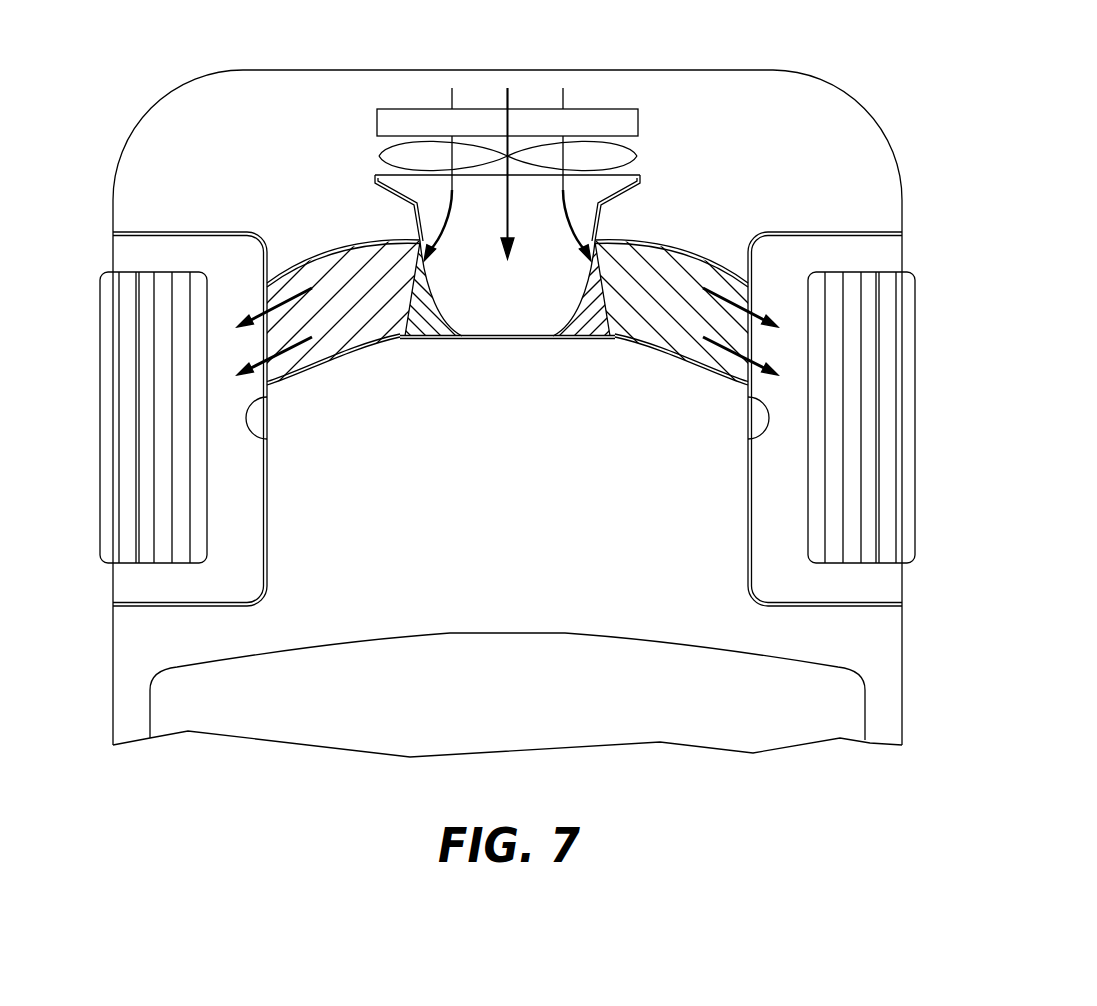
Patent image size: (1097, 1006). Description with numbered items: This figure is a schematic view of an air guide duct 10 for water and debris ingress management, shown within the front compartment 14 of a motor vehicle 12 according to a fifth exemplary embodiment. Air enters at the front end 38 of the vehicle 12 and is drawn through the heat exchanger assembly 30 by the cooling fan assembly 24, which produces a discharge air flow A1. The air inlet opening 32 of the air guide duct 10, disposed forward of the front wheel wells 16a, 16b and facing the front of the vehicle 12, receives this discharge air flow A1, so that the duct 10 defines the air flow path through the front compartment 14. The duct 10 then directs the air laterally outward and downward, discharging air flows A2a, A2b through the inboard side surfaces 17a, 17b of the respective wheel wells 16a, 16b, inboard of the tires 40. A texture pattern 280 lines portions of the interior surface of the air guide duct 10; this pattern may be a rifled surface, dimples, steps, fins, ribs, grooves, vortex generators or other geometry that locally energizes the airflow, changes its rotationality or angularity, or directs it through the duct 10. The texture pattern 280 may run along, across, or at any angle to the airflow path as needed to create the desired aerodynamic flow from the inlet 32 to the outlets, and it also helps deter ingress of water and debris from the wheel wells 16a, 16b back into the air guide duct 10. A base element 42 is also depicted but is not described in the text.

The motor vehicle 12 is at (851, 58).
The front end 38 is at (340, 70).
The heat exchanger assembly 30 is at (640, 125).
The cooling fan assembly 24 is at (618, 155).
The air inlet opening 32 is at (375, 178).
The air guide duct 10 is at (510, 339).
The texture pattern 280 is at (354, 318).
The tires 40 is at (128, 347).
The wheel well 16a is at (140, 585).
The wheel well 16b is at (878, 585).
The inboard side surface 17a is at (255, 440).
The inboard side surface 17b is at (760, 440).
The front compartment 14 is at (516, 530).
The base / bottom plate 42 is at (692, 723).
The discharge air flow A1 is at (507, 174).
The air flow A2a is at (274, 331).
The air flow A2b is at (740, 331).